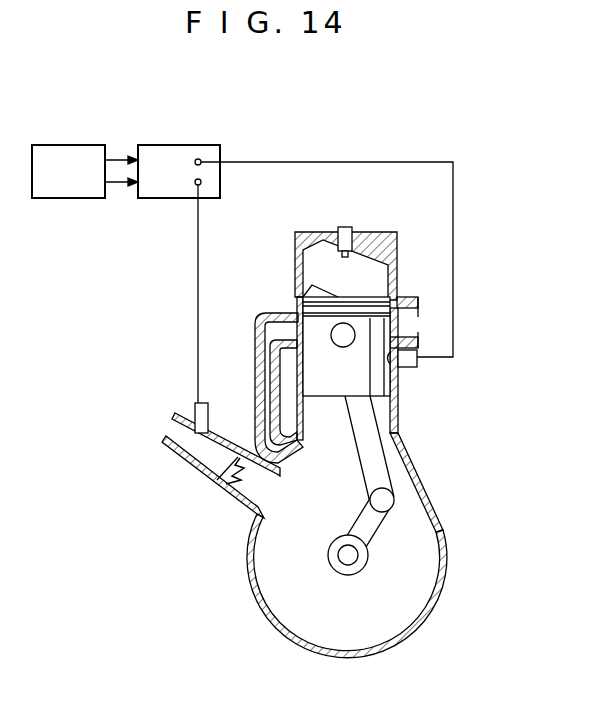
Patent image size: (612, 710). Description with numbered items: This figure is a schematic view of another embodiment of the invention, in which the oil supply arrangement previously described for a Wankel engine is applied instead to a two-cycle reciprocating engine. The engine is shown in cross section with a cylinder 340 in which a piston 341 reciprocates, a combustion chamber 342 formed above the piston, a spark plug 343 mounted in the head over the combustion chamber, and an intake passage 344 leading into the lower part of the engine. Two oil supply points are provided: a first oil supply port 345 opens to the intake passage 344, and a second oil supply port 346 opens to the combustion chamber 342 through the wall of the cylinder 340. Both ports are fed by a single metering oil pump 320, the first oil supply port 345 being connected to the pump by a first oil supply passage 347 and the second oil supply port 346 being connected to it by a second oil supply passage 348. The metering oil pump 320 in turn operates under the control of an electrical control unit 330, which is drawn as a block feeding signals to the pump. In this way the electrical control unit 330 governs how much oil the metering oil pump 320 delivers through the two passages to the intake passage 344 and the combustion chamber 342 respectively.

The electrical control unit 330 is at (70, 145).
The metering oil pump 320 is at (197, 145).
The cylinder 340 is at (398, 420).
The piston 341 is at (368, 297).
The combustion chamber 342 is at (312, 260).
The spark plug 343 is at (345, 226).
The intake passage 344 is at (213, 487).
The first oil supply port 345 is at (195, 440).
The second oil supply port 346 is at (398, 376).
The first oil supply passage 347 is at (198, 290).
The second oil supply passage 348 is at (453, 302).